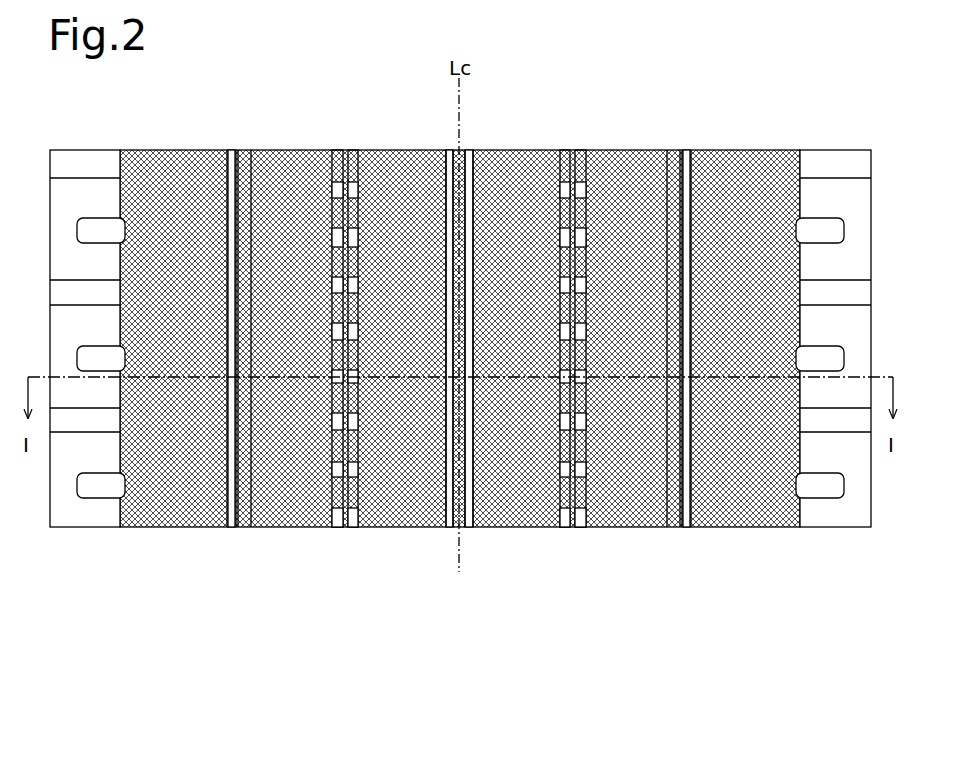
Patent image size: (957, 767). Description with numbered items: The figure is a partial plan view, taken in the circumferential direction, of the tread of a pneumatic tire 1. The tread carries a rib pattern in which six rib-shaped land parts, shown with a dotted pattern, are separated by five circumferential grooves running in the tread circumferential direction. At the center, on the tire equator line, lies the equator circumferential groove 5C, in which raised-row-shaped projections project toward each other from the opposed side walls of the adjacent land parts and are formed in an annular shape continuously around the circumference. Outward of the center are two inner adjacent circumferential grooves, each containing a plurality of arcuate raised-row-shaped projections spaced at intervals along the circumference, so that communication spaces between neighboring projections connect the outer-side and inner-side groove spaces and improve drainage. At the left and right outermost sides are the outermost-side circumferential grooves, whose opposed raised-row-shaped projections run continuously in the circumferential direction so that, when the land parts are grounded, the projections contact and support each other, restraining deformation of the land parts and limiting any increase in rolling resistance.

The pneumatic tire 1 is at (160, 146).
The equator circumferential groove 5C is at (462, 530).